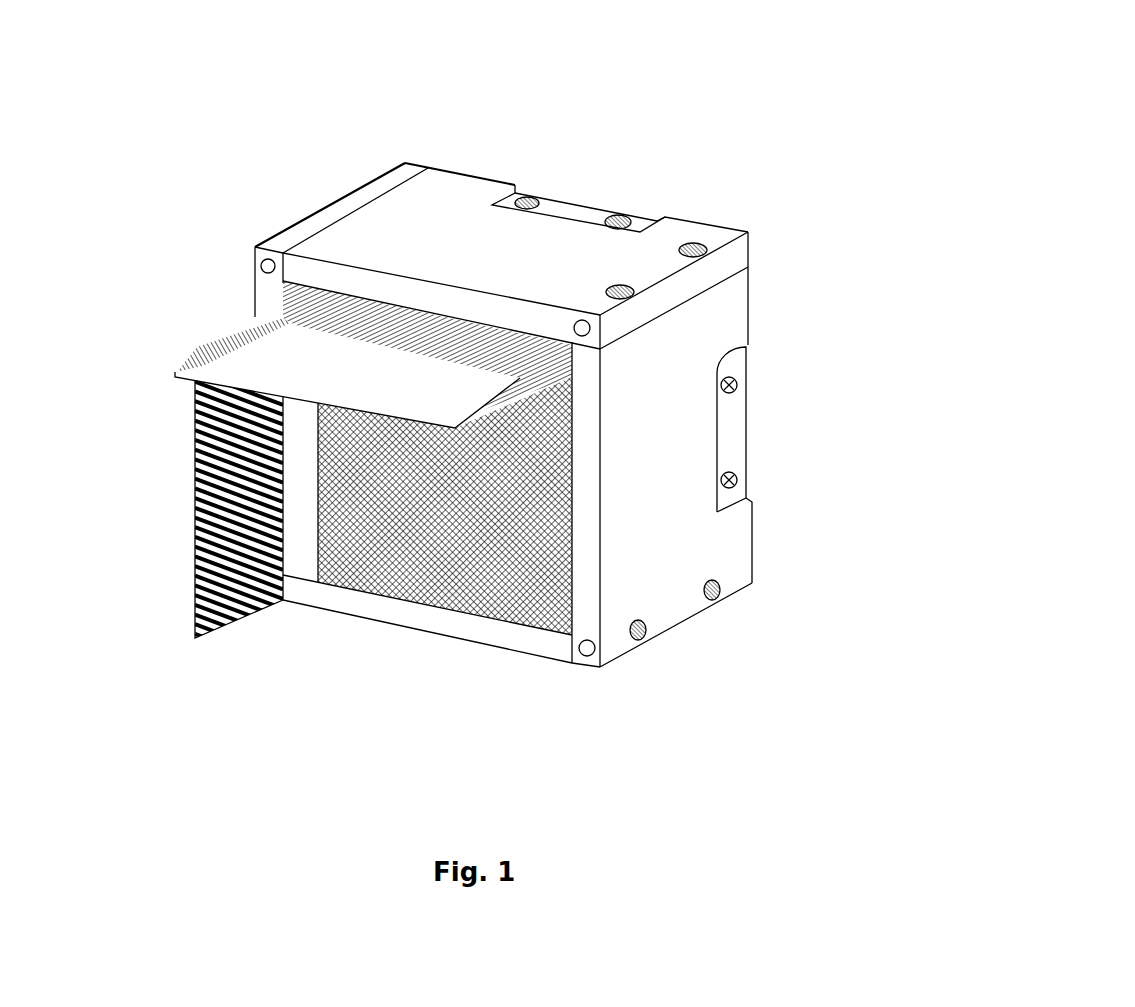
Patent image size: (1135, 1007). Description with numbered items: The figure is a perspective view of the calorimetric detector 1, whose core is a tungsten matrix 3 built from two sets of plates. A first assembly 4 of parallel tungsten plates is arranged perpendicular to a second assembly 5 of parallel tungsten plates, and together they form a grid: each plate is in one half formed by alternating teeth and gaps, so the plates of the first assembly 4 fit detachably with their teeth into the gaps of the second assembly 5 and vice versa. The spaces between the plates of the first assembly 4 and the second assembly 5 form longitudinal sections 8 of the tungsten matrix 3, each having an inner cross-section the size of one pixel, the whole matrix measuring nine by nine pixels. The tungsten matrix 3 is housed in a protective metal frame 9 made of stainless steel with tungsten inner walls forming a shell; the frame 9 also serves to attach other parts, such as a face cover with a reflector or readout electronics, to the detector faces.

The heat exchanger assembly 1 is at (805, 193).
The tungsten matrix 3 is at (462, 558).
The first assembly of parallel tungsten plates 4 is at (313, 372).
The second assembly of parallel tungsten plates 5 is at (295, 568).
The longitudinal sections 8 is at (193, 542).
The protective metal frame 9 is at (663, 415).